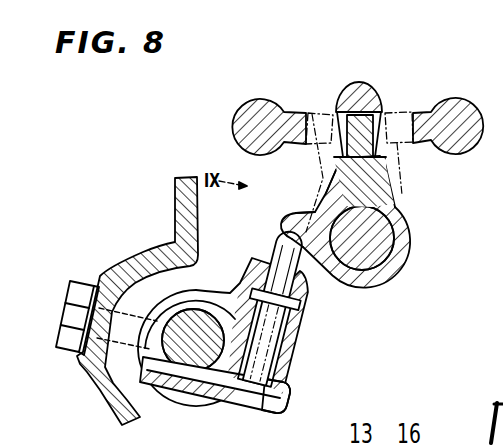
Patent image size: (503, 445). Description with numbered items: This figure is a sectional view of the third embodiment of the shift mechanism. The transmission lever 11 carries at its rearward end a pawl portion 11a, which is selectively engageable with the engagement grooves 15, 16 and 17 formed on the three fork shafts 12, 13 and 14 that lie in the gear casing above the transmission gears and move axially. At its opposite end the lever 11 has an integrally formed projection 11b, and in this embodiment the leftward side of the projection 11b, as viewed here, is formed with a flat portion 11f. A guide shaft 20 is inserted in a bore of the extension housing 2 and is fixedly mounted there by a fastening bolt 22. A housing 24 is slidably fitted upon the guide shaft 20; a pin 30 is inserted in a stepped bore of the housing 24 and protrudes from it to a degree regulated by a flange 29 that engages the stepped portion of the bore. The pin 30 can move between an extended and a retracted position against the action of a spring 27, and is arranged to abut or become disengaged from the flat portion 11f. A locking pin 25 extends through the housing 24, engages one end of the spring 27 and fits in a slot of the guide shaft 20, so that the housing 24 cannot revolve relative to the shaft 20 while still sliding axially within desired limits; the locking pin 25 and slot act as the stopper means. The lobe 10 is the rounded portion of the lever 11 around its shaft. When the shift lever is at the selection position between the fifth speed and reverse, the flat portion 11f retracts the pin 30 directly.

The extension housing 2 is at (140, 261).
The lobe of lever 10 is at (405, 251).
The transmission lever 11 is at (410, 219).
The pawl portion 11a is at (328, 171).
The projection 11b is at (312, 199).
The flat portion 11f is at (285, 226).
The fork shaft 12 is at (452, 95).
The fork shaft 13 is at (364, 82).
The fork shaft 14 is at (264, 100).
The engagement groove 15 is at (403, 112).
The engagement groove 16 is at (353, 83).
The engagement groove 17 is at (316, 112).
The guide shaft 20 is at (212, 401).
The fastening bolt 22 is at (57, 312).
The housing 24 is at (212, 296).
The locking pin 25 is at (262, 401).
The spring 27 is at (296, 370).
The flange 29 is at (309, 318).
The pin 30 is at (302, 303).